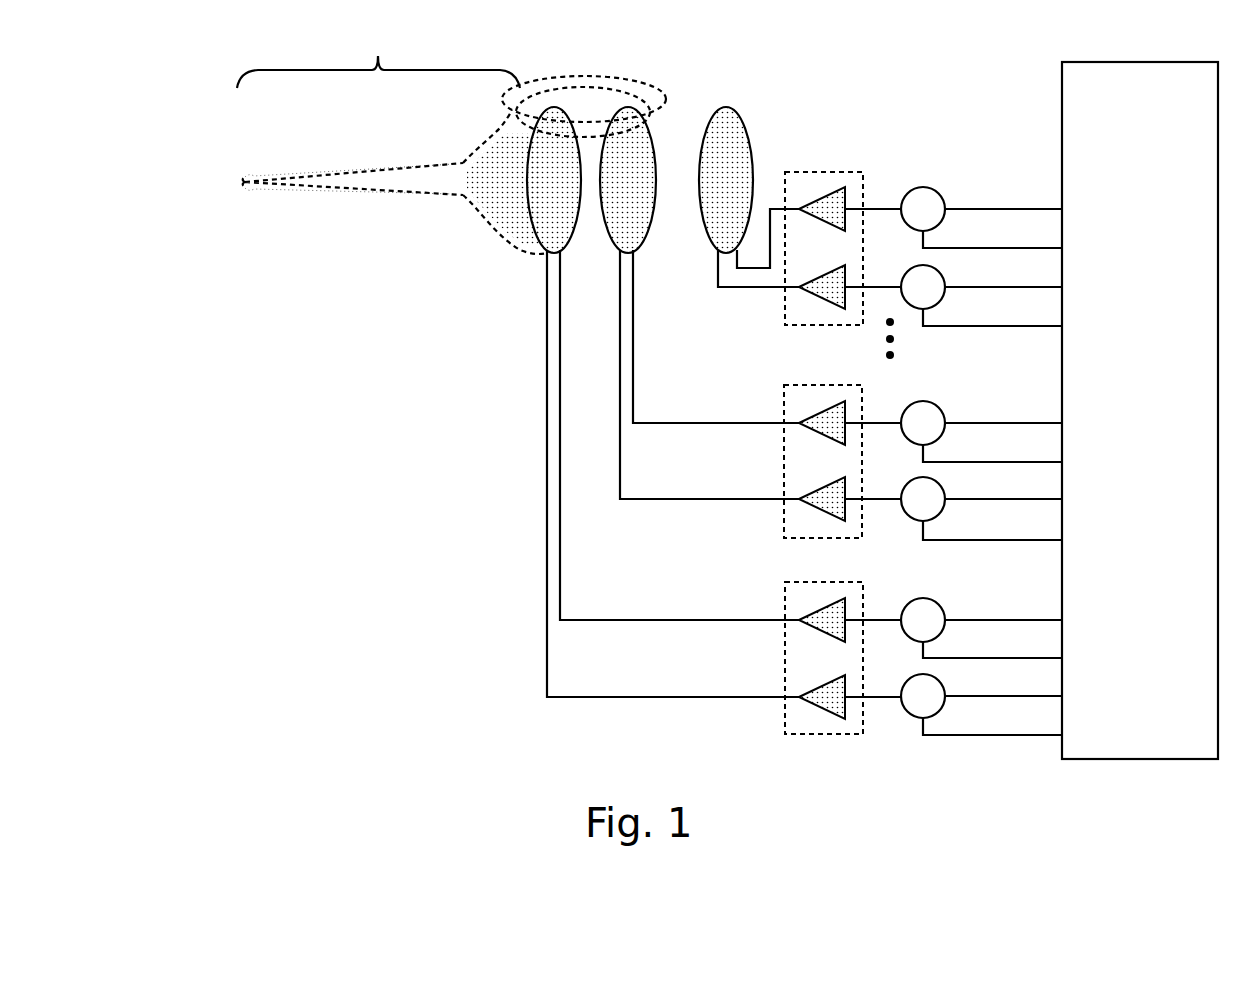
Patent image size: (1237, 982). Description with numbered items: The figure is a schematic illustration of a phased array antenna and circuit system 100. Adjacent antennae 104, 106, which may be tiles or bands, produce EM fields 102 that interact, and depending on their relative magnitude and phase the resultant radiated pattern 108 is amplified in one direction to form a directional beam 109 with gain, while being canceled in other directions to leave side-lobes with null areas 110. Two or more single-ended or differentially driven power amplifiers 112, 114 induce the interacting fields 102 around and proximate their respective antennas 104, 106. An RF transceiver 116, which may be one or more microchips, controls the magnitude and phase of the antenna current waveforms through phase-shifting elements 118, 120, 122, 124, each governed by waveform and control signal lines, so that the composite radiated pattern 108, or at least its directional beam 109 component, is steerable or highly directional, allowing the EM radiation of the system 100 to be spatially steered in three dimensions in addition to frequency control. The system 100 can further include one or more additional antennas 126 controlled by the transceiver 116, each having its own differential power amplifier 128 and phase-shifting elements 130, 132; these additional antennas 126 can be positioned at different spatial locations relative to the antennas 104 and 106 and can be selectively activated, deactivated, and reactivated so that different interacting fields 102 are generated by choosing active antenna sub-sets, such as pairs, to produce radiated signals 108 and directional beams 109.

The system 100 is at (403, 522).
The EM fields 102 is at (602, 80).
The antenna 104 is at (640, 185).
The antenna 106 is at (553, 200).
The radiated pattern 108 is at (378, 58).
The directional beam 109 is at (240, 165).
The null 110 is at (493, 106).
The power amplifier 112 is at (784, 512).
The power amplifier 114 is at (785, 715).
The RF transceiver 116 is at (1130, 485).
The phase-shifting element 118 is at (923, 401).
The phase-shifting element 120 is at (906, 514).
The phase-shifting element 122 is at (923, 598).
The phase-shifting element 124 is at (908, 713).
The additional antenna 126 is at (726, 145).
The differential power amplifier 128 is at (832, 172).
The phase-shifting element 130 is at (923, 187).
The phase-shifting element 132 is at (905, 272).